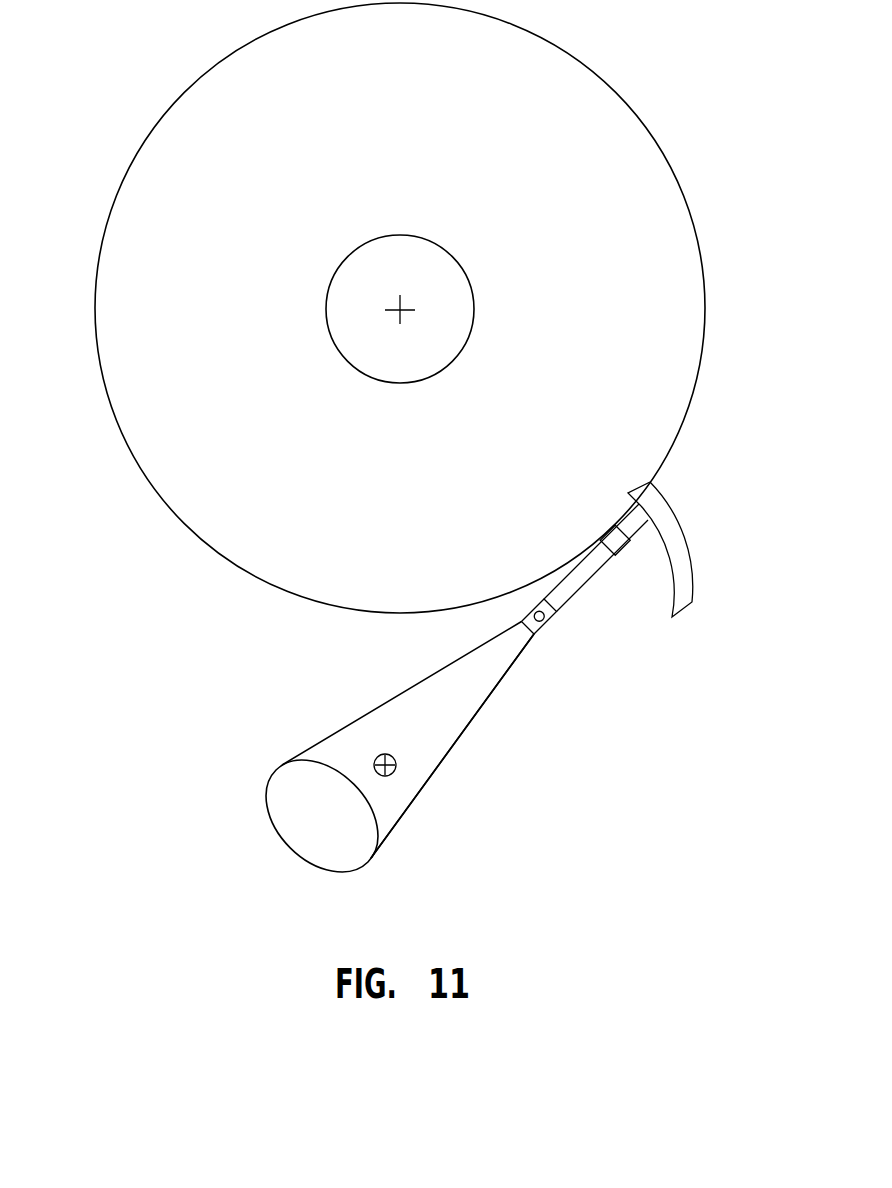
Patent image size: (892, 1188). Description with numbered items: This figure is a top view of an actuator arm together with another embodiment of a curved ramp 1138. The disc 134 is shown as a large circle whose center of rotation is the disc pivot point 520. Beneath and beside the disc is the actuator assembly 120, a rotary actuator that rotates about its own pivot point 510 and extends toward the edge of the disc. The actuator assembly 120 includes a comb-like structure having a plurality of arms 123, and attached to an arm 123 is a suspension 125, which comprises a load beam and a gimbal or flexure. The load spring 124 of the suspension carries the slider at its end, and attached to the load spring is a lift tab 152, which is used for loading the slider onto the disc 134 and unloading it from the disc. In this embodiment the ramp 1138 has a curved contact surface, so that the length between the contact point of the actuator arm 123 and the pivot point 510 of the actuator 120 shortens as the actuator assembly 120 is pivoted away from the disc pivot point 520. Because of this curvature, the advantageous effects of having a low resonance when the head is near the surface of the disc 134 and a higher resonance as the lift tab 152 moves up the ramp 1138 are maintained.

The disc 134 is at (641, 124).
The disc pivot point 520 is at (398, 311).
The actuator assembly 120 is at (473, 728).
The arm 123 is at (432, 777).
The pivot point 510 is at (385, 777).
The suspension 125 is at (560, 601).
The load spring 124 is at (585, 585).
The lift tab 152 is at (643, 520).
The curved ramp 1138 is at (684, 570).